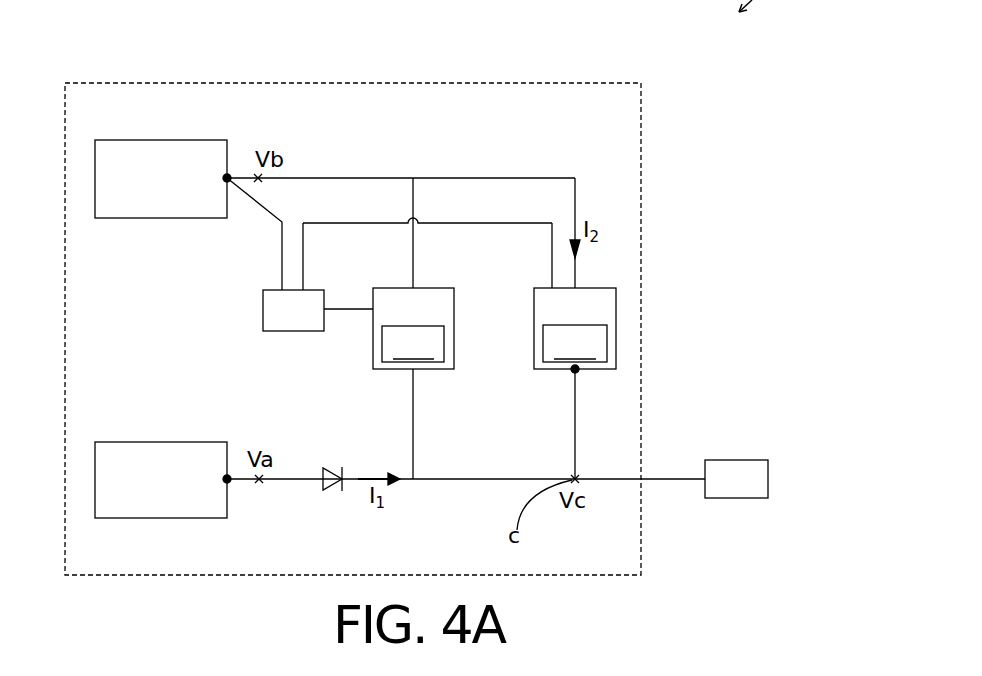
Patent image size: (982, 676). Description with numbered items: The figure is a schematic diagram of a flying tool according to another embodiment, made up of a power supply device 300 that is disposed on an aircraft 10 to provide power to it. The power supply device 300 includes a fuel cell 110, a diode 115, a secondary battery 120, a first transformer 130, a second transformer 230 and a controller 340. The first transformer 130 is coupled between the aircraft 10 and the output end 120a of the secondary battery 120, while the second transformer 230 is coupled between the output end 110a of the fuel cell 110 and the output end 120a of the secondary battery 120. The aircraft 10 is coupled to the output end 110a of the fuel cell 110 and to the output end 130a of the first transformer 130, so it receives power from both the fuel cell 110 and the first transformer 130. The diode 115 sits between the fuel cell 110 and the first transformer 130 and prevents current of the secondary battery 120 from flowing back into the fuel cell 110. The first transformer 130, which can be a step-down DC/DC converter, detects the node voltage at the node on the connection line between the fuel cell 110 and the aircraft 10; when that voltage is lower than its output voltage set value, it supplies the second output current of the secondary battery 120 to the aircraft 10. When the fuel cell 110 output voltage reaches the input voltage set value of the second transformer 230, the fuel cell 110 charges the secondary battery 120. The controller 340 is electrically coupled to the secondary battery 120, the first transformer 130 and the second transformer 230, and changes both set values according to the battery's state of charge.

The power supply device 300 is at (354, 83).
The secondary battery 120 is at (182, 192).
The output end of the secondary battery 120a is at (232, 175).
The controller 340 is at (314, 325).
The second transformer 230 is at (434, 321).
The first transformer 130 is at (596, 321).
The output end of the first transformer 130a is at (575, 372).
The fuel cell 110 is at (182, 494).
The output end of the fuel cell 110a is at (229, 482).
The diode 115 is at (333, 488).
The aircraft 10 is at (751, 494).